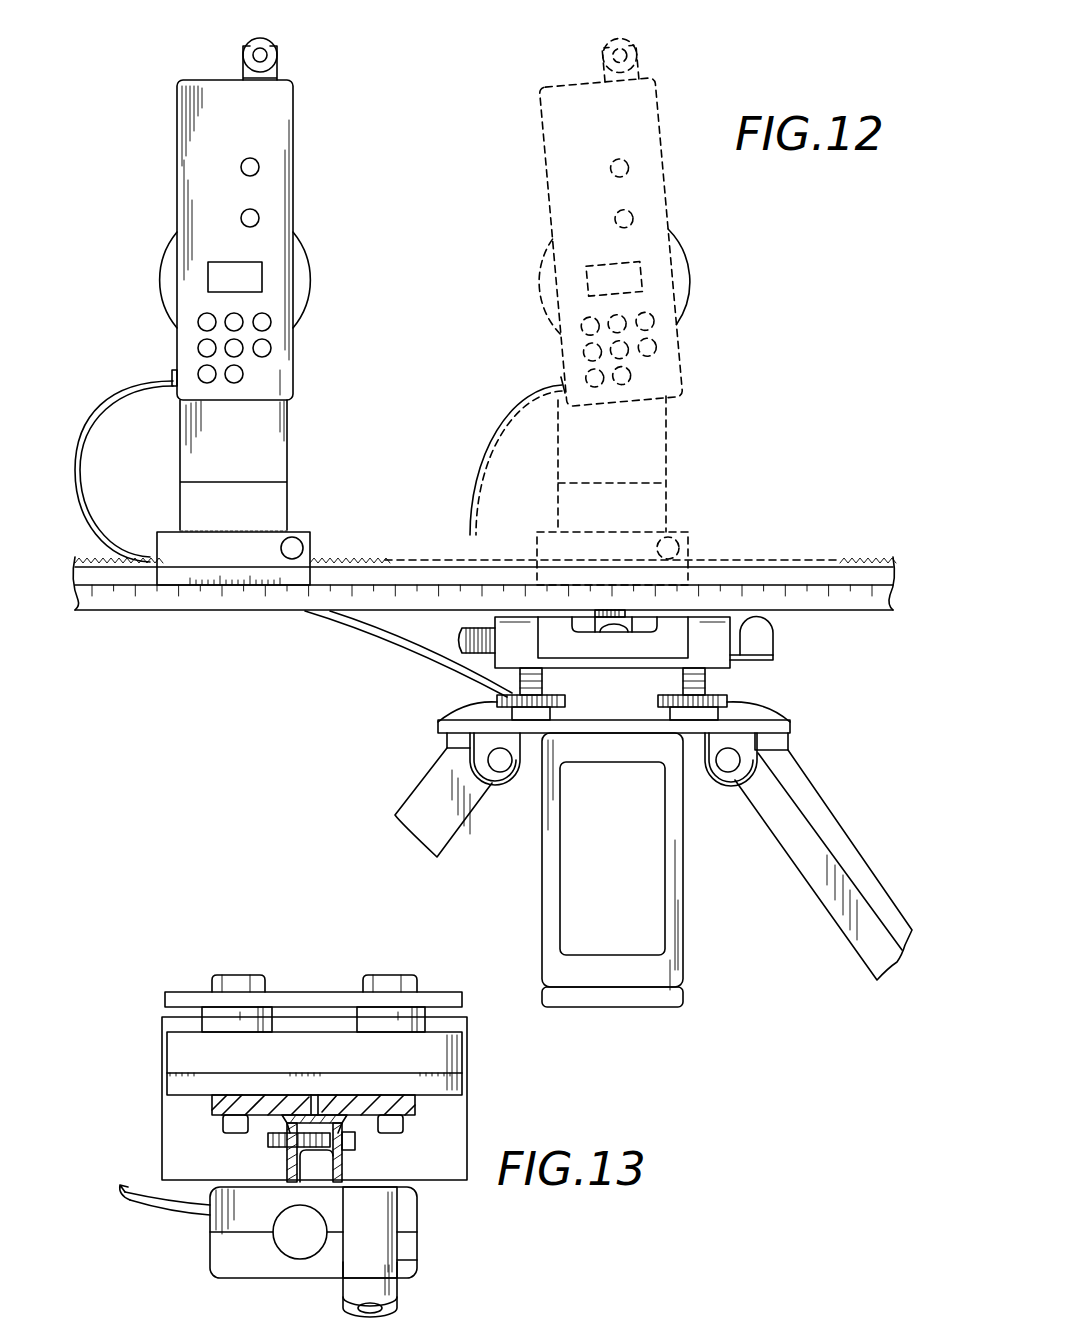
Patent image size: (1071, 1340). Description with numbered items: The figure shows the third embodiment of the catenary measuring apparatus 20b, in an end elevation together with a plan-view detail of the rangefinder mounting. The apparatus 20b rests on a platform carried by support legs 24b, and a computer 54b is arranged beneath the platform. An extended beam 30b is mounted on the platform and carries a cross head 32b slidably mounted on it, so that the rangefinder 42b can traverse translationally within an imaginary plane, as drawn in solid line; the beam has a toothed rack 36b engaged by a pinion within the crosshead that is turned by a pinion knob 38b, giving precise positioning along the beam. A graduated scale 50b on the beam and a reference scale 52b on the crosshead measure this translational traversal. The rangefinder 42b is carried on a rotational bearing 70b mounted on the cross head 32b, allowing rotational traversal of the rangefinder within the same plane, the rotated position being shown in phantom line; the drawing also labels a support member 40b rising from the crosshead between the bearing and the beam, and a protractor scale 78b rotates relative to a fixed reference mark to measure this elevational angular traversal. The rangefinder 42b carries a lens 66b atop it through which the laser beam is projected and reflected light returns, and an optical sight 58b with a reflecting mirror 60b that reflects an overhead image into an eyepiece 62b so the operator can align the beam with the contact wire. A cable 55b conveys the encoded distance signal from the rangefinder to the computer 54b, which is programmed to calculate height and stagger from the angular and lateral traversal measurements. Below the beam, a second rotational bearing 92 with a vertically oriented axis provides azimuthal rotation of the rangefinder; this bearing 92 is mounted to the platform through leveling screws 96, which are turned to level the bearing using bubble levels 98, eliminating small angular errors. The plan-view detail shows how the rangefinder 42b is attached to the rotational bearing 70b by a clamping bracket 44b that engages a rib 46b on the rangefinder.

In FIG. 12, the apparatus 20b is at (758, 360).
In FIG. 12, the support legs 24b is at (413, 800).
In FIG. 12, the extended beam 30b is at (806, 572).
In FIG. 12, the cross head 32b is at (264, 545).
In FIG. 12, the toothed rack 36b is at (75, 590).
In FIG. 12, the pinion knob 38b is at (305, 548).
In FIG. 12, the support arm 40b is at (283, 440).
In FIG. 13, the support arm 40b is at (180, 995).
In FIG. 12, the rangefinder 42b is at (285, 160).
In FIG. 13, the rangefinder 42b is at (415, 1258).
In FIG. 13, the clamping bracket 44b is at (278, 1147).
In FIG. 13, the rib 46b is at (322, 1167).
In FIG. 12, the graduated scale 50b is at (288, 600).
In FIG. 12, the reference scale 52b is at (190, 578).
In FIG. 12, the computer 54b is at (680, 960).
In FIG. 12, the cable 55b is at (151, 378).
In FIG. 13, the cable 55b is at (165, 1212).
In FIG. 12, the optical sight 58b is at (297, 44).
In FIG. 13, the optical sight 58b is at (530, 1302).
In FIG. 13, the reflecting mirror 60b is at (385, 1212).
In FIG. 12, the eyepiece 62b is at (282, 60).
In FIG. 13, the eyepiece 62b is at (395, 1315).
In FIG. 13, the lens 66b is at (300, 1245).
In FIG. 12, the rotational bearing 70b is at (305, 268).
In FIG. 13, the rotational bearing 70b is at (455, 1055).
In FIG. 13, the protractor scale 78b is at (455, 1090).
In FIG. 12, the second rotational bearing 92 is at (718, 668).
In FIG. 12, the leveling screws 96 is at (497, 698).
In FIG. 12, the bubble levels 98 is at (765, 633).